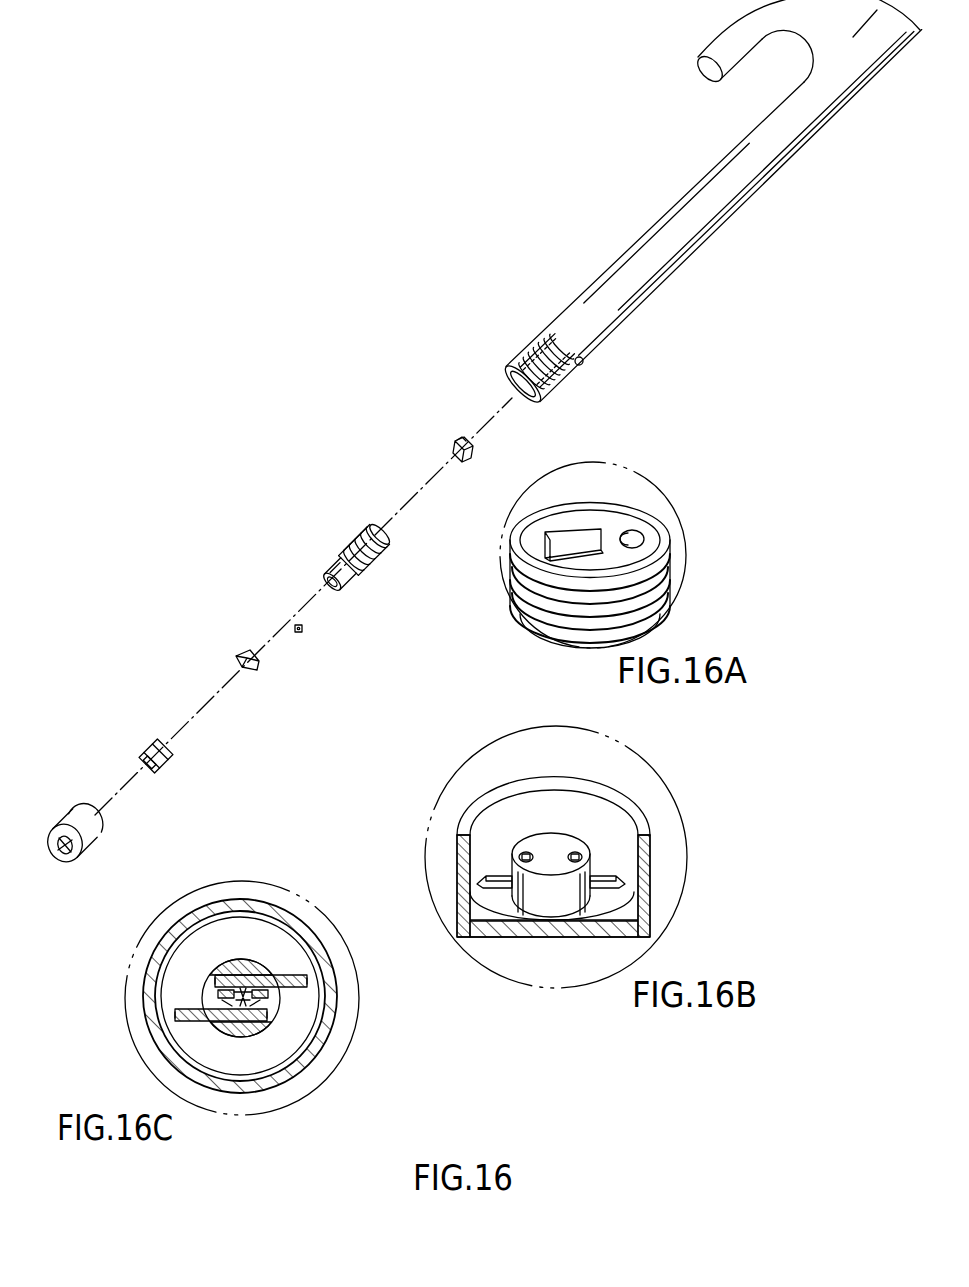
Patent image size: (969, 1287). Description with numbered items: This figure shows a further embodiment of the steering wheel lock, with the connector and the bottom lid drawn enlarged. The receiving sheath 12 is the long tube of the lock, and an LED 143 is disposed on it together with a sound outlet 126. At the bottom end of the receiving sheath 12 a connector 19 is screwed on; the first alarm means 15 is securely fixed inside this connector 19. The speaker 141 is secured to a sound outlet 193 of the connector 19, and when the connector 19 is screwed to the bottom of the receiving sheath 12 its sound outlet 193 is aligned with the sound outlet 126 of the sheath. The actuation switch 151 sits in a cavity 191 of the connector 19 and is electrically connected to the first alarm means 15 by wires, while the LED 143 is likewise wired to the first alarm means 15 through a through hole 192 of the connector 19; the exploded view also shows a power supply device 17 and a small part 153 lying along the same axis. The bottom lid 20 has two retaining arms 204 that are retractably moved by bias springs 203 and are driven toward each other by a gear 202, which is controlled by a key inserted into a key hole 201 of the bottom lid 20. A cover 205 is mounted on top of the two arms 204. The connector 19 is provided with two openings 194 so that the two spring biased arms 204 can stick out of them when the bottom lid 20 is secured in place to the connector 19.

In FIG. 16, the receiving sheath 12 is at (613, 277).
In FIG. 16, the LED 143 is at (585, 359).
In FIG. 16, the sound outlet 126 is at (552, 367).
In FIG. 16, the actuation switch 151 is at (455, 440).
In FIG. 16, the key block 153 is at (476, 448).
In FIG. 16, the connector 19 is at (355, 533).
In FIG. 16, the openings 194 is at (343, 560).
In FIG. 16, the sound outlet 193 is at (382, 567).
In FIG. 16, the speaker 141 is at (305, 633).
In FIG. 16, the first alarm means 15 is at (262, 672).
In FIG. 16, the power supply device 17 is at (176, 762).
In FIG. 16, the bottom lid 20 is at (61, 822).
In FIG. 16, the key hole 201 is at (63, 862).
In FIG. 16A, the cavity 191 is at (577, 542).
In FIG. 16A, the through hole 192 is at (640, 541).
In FIG. 16B, the cover 205 is at (543, 850).
In FIG. 16B, the retaining arms 204 is at (498, 888).
In FIG. 16C, the retaining arms 204 is at (188, 1021).
In FIG. 16C, the bias springs 203 is at (226, 975).
In FIG. 16C, the gear 202 is at (238, 1022).